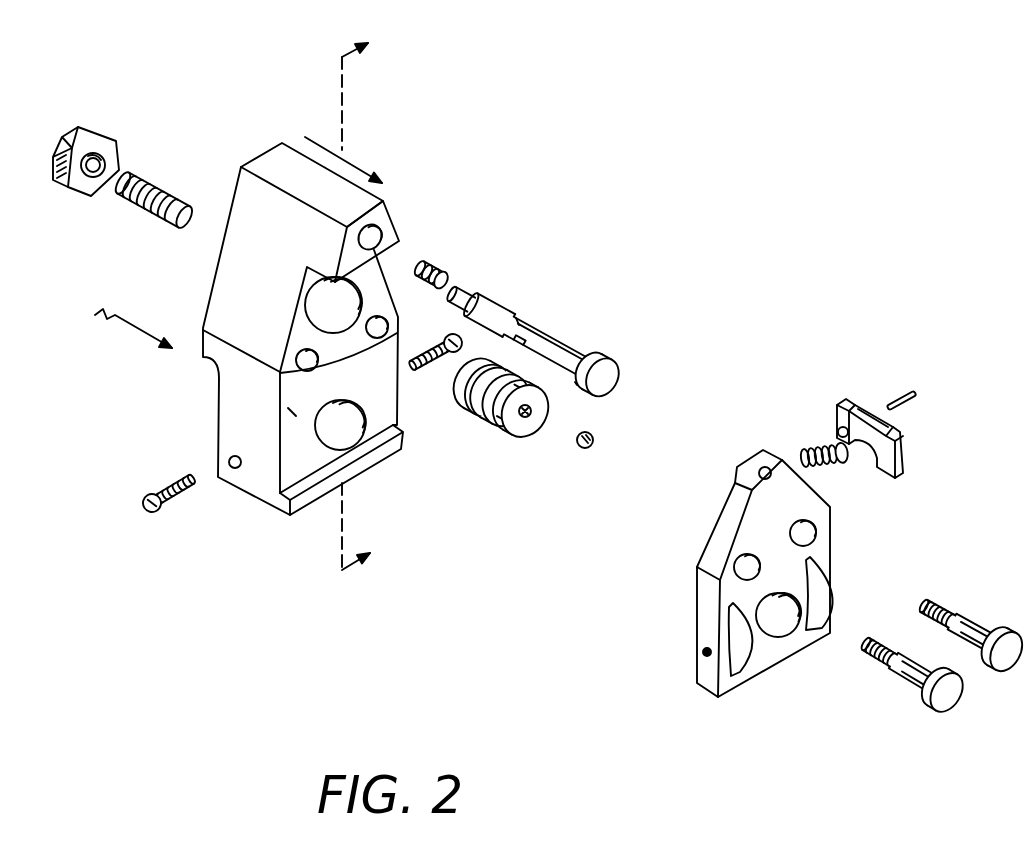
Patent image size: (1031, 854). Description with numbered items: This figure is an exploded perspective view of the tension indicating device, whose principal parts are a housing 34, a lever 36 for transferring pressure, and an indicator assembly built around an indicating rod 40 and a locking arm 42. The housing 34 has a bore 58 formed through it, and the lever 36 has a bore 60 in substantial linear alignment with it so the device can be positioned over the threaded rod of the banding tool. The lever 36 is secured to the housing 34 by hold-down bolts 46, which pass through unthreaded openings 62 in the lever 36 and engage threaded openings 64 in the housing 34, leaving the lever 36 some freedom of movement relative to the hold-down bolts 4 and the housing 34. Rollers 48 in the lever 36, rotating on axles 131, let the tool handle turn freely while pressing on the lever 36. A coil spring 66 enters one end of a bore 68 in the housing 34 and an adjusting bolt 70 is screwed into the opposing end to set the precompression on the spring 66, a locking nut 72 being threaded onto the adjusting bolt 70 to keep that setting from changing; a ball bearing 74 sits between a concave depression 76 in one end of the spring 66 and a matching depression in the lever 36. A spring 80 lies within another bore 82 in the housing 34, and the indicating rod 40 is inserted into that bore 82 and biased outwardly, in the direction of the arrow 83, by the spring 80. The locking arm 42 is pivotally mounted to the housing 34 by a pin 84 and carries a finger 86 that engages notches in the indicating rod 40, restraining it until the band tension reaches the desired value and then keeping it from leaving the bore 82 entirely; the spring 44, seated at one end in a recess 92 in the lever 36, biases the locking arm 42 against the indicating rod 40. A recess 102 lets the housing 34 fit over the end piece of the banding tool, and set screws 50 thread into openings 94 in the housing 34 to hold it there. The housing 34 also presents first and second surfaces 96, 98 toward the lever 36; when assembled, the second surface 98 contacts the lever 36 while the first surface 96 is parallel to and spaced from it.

The housing 34 is at (265, 162).
The lever 36 is at (703, 622).
The indicating rod 40 is at (536, 332).
The locking arm 42 is at (905, 465).
The spring 44 is at (810, 450).
The hold-down bolts 46 is at (1007, 677).
The rollers 48 is at (830, 585).
The set screws 50 is at (172, 496).
The bore 58 is at (350, 433).
The bore 60 is at (777, 633).
The openings 62 is at (737, 557).
The threaded openings 64 is at (294, 367).
The coil spring 66 is at (497, 430).
The bore 68 is at (323, 303).
The adjusting bolt 70 is at (160, 183).
The locking nut 72 is at (87, 132).
The ball bearing 74 is at (592, 450).
The concave depression 76 is at (528, 417).
The spring 80 is at (440, 268).
The bore 82 is at (383, 233).
The arrow 83 is at (372, 174).
The pin 84 is at (903, 393).
The finger 86 is at (903, 425).
The recess 92 is at (784, 466).
The threaded openings 94 is at (240, 466).
The first surface 96 is at (290, 414).
The second surface 98 is at (403, 441).
The recess 102 is at (108, 323).
The axles 131 is at (697, 673).
The hold-down bolts 4 is at (368, 294).